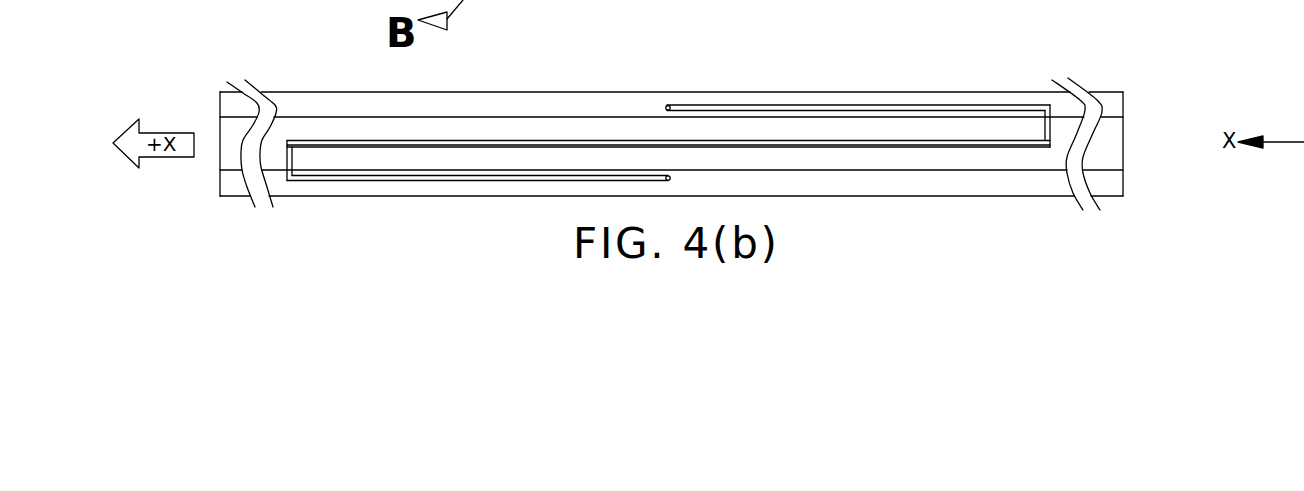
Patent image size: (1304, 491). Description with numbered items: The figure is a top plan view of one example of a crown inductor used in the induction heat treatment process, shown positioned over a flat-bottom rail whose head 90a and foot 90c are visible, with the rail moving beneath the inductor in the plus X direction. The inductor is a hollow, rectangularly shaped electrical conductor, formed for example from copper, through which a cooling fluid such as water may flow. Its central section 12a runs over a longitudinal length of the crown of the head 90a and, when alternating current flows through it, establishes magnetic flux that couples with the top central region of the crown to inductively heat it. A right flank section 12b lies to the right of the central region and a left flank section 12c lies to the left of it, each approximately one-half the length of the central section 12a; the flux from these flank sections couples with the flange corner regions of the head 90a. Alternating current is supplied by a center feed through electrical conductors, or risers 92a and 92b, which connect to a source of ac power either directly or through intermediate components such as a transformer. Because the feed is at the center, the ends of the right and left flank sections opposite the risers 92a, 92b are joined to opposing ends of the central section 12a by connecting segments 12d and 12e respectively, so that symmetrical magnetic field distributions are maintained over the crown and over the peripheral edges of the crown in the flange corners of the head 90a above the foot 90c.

The central section 12a is at (614, 145).
The right flank section 12b is at (917, 107).
The left flank section 12c is at (492, 181).
The connecting segment 12d is at (1049, 126).
The connecting segment 12e is at (287, 163).
The riser 92a is at (668, 106).
The riser 92b is at (670, 178).
The head 90a is at (1112, 145).
The foot 90c is at (1113, 105).